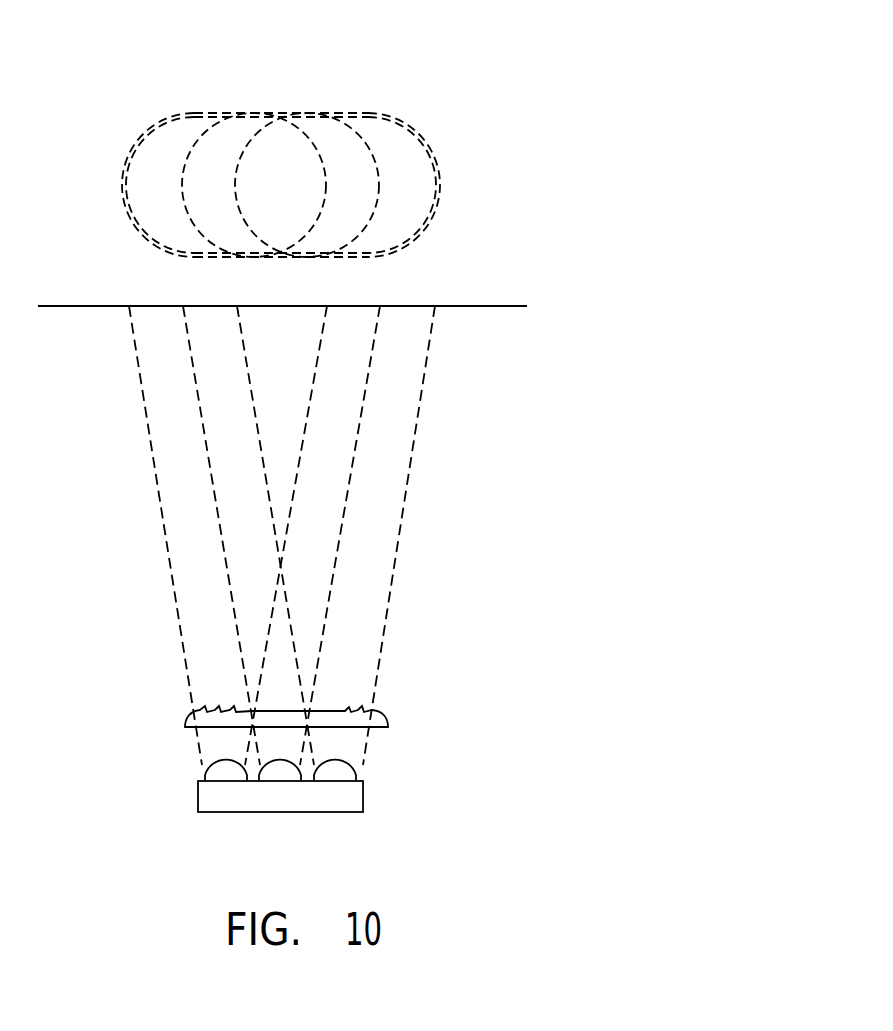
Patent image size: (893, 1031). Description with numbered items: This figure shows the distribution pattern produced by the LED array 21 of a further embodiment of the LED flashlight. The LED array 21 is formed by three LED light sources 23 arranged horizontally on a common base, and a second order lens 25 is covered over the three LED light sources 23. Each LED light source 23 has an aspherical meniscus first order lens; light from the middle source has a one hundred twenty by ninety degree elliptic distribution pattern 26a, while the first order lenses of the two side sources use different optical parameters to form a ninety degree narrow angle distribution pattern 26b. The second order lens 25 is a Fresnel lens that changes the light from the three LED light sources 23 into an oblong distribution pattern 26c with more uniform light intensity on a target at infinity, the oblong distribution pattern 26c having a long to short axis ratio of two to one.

The LED array 21 is at (348, 800).
The LED light source 23 is at (217, 773).
The second order lens 25 is at (385, 712).
The elliptic distribution pattern 26a is at (198, 138).
The narrow angle distribution pattern 26b is at (135, 139).
The oblong distribution pattern 26c is at (290, 135).